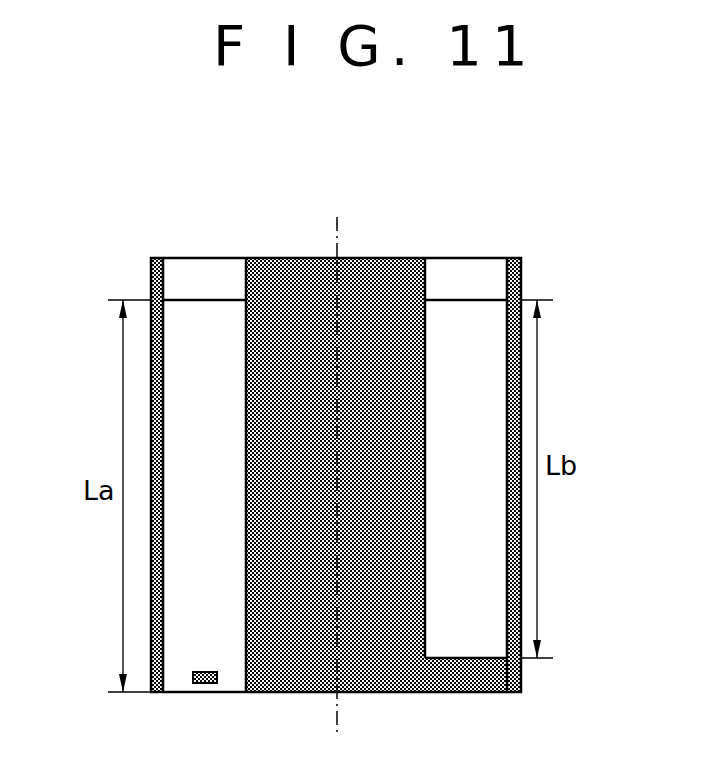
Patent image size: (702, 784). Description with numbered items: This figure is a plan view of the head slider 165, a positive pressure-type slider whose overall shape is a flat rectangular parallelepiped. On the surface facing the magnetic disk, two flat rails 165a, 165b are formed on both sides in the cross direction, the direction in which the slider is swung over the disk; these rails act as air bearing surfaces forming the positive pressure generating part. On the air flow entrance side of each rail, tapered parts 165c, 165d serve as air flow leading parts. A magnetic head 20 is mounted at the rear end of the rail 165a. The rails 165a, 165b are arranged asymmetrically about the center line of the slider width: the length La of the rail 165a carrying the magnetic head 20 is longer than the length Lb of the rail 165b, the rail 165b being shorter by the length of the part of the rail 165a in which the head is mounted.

The head slider 165 is at (296, 207).
The rail 165a is at (178, 403).
The rail 165b is at (485, 392).
The tapered part 165c is at (192, 270).
The tapered part 165d is at (466, 270).
The magnetic head 20 is at (200, 684).